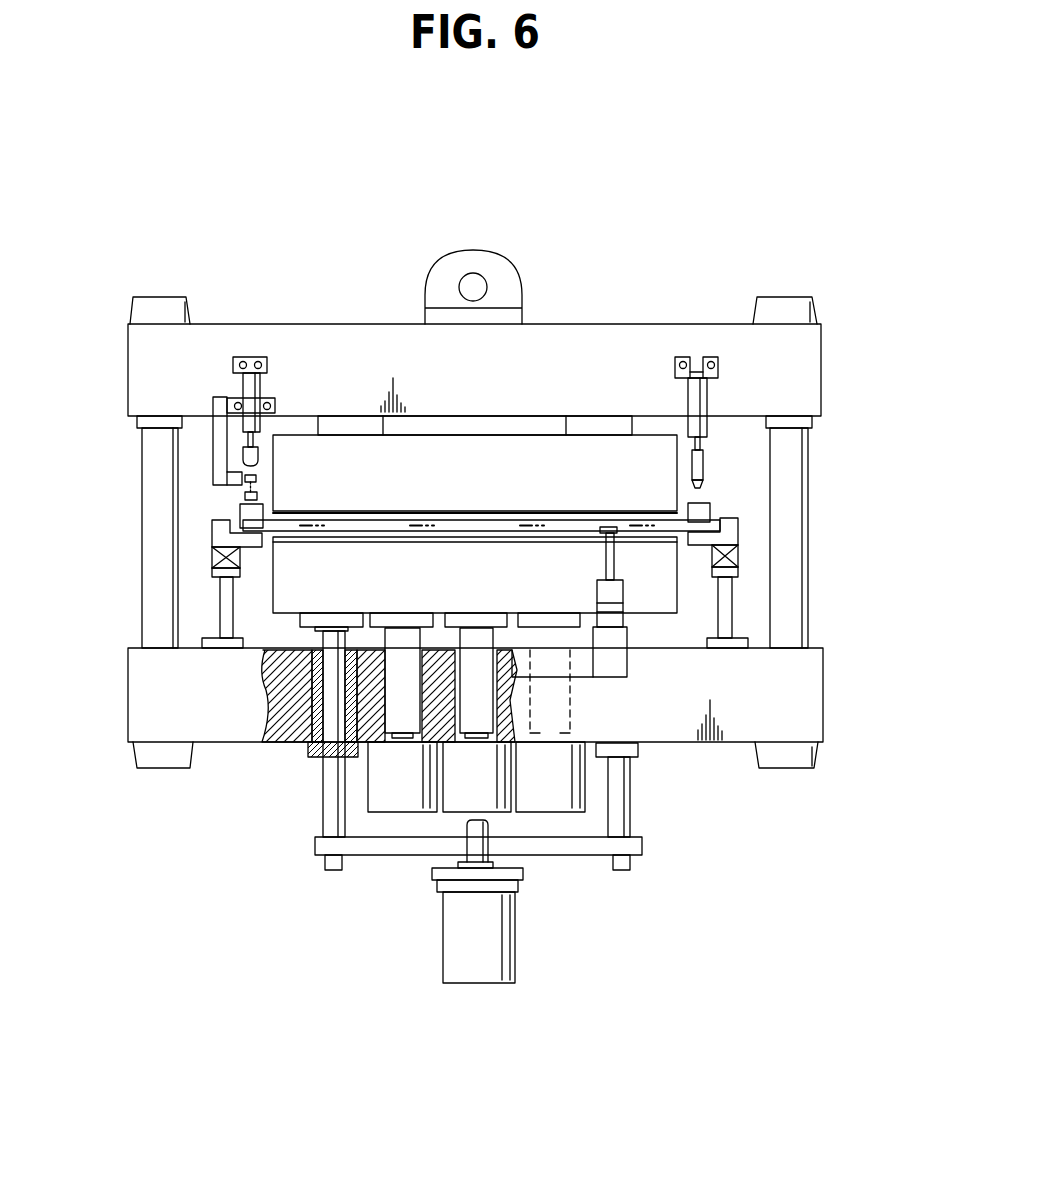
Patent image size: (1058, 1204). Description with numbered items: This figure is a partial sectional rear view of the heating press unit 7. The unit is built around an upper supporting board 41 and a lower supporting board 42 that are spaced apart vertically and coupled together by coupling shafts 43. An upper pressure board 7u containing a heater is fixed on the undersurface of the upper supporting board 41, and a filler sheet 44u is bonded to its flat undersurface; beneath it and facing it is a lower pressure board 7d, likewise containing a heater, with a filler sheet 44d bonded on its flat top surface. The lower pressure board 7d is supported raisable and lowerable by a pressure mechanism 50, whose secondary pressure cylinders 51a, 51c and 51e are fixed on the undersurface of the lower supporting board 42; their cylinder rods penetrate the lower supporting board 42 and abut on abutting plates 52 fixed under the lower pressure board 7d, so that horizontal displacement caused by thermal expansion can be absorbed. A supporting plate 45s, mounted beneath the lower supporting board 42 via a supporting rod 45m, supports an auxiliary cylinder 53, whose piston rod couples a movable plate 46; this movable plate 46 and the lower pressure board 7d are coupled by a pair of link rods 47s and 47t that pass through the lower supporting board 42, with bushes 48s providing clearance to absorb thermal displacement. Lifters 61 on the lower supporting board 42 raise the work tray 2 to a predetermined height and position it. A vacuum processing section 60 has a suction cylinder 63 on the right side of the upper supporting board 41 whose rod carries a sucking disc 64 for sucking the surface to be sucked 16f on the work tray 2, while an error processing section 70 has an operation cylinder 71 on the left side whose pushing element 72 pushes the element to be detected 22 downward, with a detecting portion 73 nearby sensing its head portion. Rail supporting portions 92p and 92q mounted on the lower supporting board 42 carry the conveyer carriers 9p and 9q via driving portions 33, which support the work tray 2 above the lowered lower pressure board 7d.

The heating press unit 7 is at (702, 214).
The upper pressure board 7u is at (650, 436).
The lower pressure board 7d is at (268, 602).
The upper supporting board 41 is at (600, 322).
The lower supporting board 42 is at (743, 745).
The coupling shafts 43 is at (142, 623).
The filler sheet 44u is at (438, 505).
The filler sheet 44d is at (345, 535).
The work tray 2 is at (740, 522).
The surface to be sucked 16f is at (714, 502).
The element to be detected 22 is at (260, 482).
The conveyer carrier 9p is at (212, 538).
The conveyer carrier 9q is at (740, 527).
The driving portions 33 is at (212, 555).
The rail supporting portion 92p is at (210, 590).
The rail supporting portion 92q is at (747, 603).
The error processing section 70 is at (229, 338).
The operation cylinder 71 is at (235, 387).
The pushing element 72 is at (262, 456).
The detecting portion 73 is at (226, 488).
The vacuum processing section 60 is at (711, 335).
The suction cylinder 63 is at (710, 392).
The sucking disc 64 is at (705, 488).
The lifters 61 is at (632, 590).
The abutting plates 52 is at (532, 613).
The pressure mechanism 50 is at (252, 915).
The bushes 48s is at (305, 757).
The link rod 47s is at (322, 800).
The link rod 47t is at (637, 817).
The secondary pressure cylinder 51e is at (398, 813).
The secondary pressure cylinder 51a is at (507, 815).
The secondary pressure cylinder 51c is at (570, 813).
The movable plate 46 is at (412, 855).
The supporting plate 45s is at (453, 867).
The supporting rod 45m is at (492, 842).
The auxiliary cylinder 53 is at (513, 982).